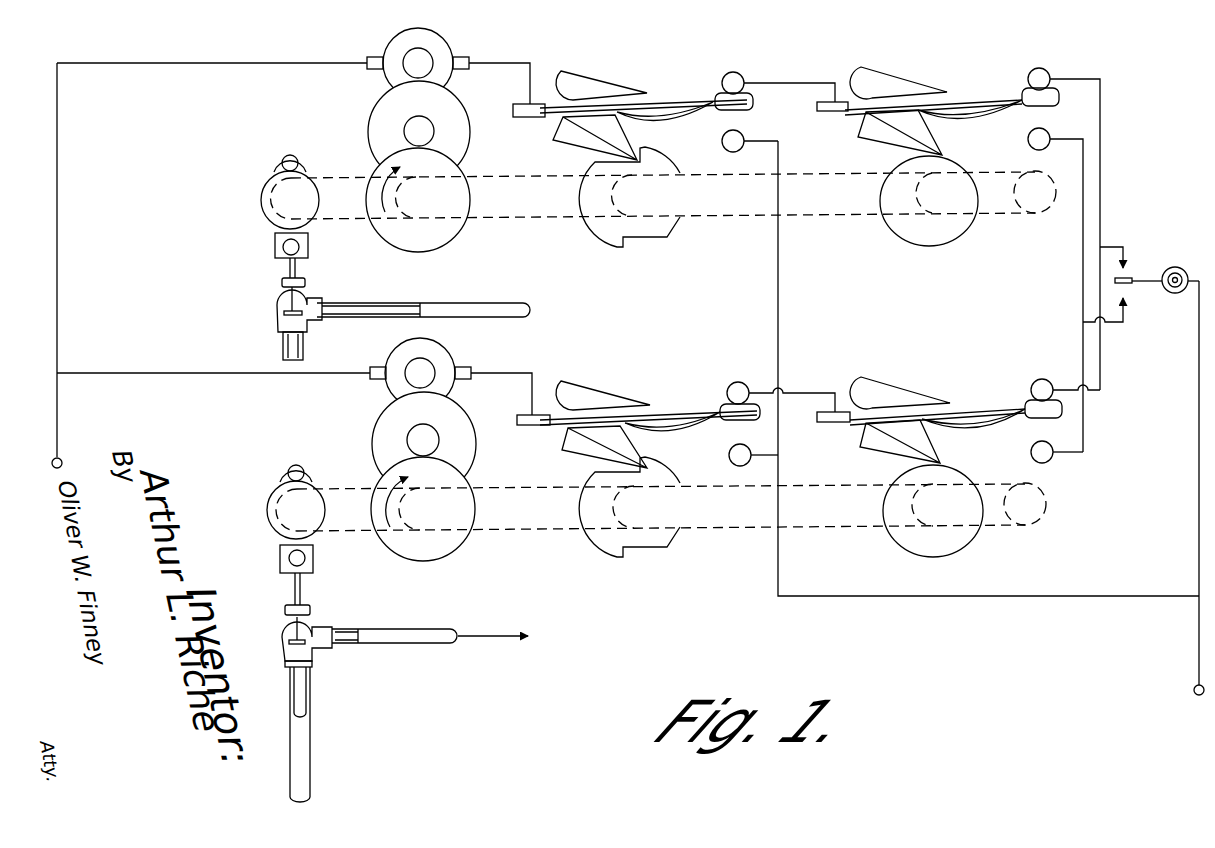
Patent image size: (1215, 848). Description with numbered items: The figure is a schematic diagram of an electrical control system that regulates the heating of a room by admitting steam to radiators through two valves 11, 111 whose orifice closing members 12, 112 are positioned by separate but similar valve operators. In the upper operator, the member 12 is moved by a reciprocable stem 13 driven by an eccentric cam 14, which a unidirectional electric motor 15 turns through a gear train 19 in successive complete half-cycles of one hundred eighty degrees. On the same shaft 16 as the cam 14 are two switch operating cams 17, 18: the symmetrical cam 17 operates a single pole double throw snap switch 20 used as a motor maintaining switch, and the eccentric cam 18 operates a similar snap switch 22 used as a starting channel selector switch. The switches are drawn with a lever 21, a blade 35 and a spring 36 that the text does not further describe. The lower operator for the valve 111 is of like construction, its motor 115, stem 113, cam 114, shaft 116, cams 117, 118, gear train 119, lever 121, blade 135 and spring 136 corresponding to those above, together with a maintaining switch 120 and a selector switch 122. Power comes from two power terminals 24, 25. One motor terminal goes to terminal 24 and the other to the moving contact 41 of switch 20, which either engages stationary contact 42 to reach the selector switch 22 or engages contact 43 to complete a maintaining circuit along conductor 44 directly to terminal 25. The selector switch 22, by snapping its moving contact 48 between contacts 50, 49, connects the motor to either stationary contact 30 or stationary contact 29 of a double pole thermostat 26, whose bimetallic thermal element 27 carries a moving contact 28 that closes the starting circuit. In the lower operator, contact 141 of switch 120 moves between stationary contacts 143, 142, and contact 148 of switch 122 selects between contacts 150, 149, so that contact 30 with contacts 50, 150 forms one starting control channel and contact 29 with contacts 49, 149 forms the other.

The valve 11 is at (361, 318).
The orifice closing member 12 is at (284, 313).
The reciprocable stem 13 is at (297, 280).
The eccentric cam 14 is at (258, 200).
The electric motor 15 is at (440, 52).
The shaft 16 is at (490, 222).
The switch operating cam 17 is at (608, 246).
The switch operating cam 18 is at (915, 240).
The gear train 19 is at (368, 125).
The single pole double throw snap switch 20 is at (694, 94).
The switch lever 21 is at (572, 85).
The starting channel selector switch 22 is at (979, 239).
The power terminal 24 is at (60, 285).
The power terminal 25 is at (1199, 362).
The double pole thermostat 26 is at (1141, 249).
The bimetallic thermal element 27 is at (1172, 294).
The moving electric contact 28 is at (1130, 278).
The stationary contact 29 is at (1130, 303).
The stationary contact 30 is at (1130, 268).
The contact blade 35 is at (650, 104).
The spring 36 is at (663, 123).
The moving contact 41 is at (757, 104).
The stationary contact 42 is at (741, 78).
The contact 43 is at (745, 139).
The conductor 44 is at (785, 585).
The moving contact 48 is at (1056, 104).
The contact 49 is at (1028, 139).
The contact 50 is at (1047, 72).
The valve 111 is at (380, 693).
The orifice closing member 112 is at (288, 640).
The connecting rod 113 is at (303, 581).
The cam 114 is at (272, 480).
The motor 115 is at (445, 358).
The shaft 116 is at (515, 532).
The pawl clutch 117 is at (600, 558).
The disc 118 is at (960, 542).
The drive wheel 119 is at (372, 437).
The maintaining switch 120 is at (695, 386).
The switch lever 121 is at (572, 393).
The selector switch 122 is at (1000, 402).
The contact blade 135 is at (665, 414).
The spring 136 is at (690, 420).
The contact 141 is at (730, 421).
The stationary contact 142 is at (788, 380).
The stationary contact 143 is at (738, 458).
The contact 148 is at (1040, 420).
The contact 149 is at (1055, 455).
The contact 150 is at (1043, 378).